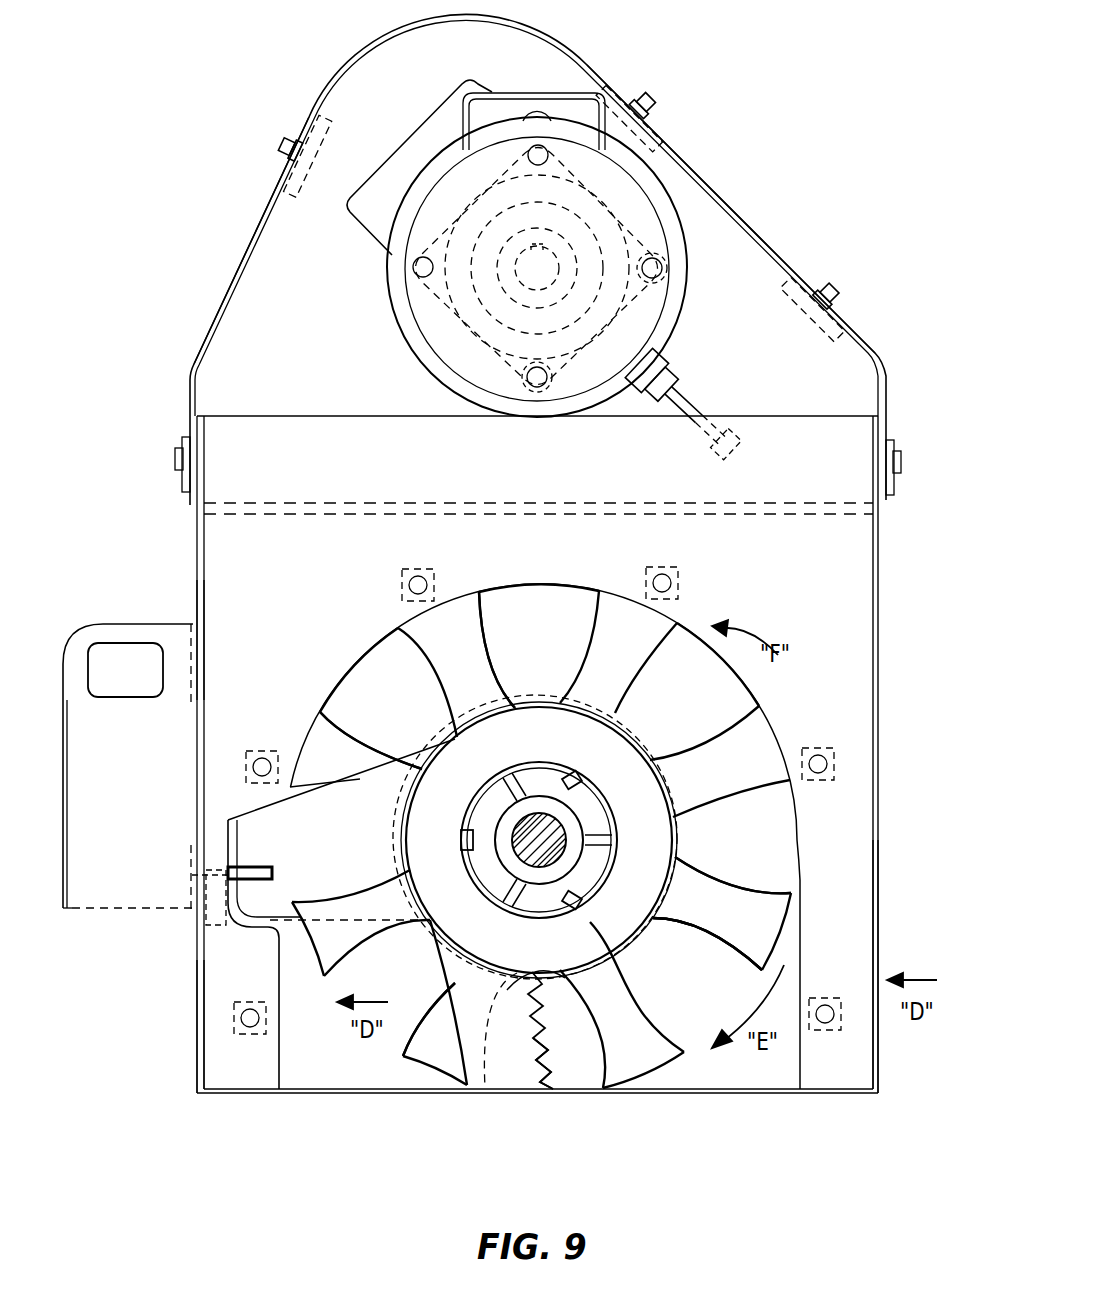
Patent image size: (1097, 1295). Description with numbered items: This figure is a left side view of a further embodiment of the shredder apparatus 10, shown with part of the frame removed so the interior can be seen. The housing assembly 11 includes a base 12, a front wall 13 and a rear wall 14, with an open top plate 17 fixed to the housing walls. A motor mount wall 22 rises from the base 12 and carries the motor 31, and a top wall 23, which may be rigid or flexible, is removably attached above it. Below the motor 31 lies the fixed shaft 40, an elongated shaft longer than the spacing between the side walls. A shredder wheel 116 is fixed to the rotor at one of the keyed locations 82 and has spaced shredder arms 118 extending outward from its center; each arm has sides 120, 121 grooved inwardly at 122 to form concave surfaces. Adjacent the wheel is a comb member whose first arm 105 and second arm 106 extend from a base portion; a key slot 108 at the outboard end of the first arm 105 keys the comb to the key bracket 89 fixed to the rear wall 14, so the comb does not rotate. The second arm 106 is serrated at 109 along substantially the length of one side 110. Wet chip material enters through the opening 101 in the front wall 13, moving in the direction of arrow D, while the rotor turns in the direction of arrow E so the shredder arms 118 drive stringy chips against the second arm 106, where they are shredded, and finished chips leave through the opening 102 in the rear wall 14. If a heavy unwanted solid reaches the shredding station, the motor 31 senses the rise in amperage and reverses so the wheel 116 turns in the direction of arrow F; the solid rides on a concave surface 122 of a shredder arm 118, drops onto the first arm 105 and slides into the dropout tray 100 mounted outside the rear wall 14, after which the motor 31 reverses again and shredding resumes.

The shredder apparatus 10 is at (690, 60).
The housing assembly 11 is at (197, 548).
The base 12 is at (315, 1088).
The front wall 13 is at (878, 643).
The rear wall 14 is at (197, 599).
The open top plate 17 is at (290, 503).
The motor mount wall 22 is at (250, 296).
The top wall 23 is at (702, 165).
The motor 31 is at (395, 325).
The fixed shaft 40 is at (542, 865).
The keyed locations 82 is at (578, 777).
The key bracket 89 is at (222, 930).
The dropout tray 100 is at (96, 905).
The opening 101 is at (878, 882).
The opening 102 is at (195, 1008).
The first arm 105 is at (290, 830).
The second arm 106 is at (520, 1011).
The key slot 108 is at (262, 866).
The serrations 109 is at (556, 1045).
The side 110 is at (552, 968).
The shredder wheel 116 is at (685, 830).
The shredder arms 118 is at (600, 630).
The side 120 is at (757, 885).
The side 121 is at (693, 923).
The concave surface 122 is at (486, 662).